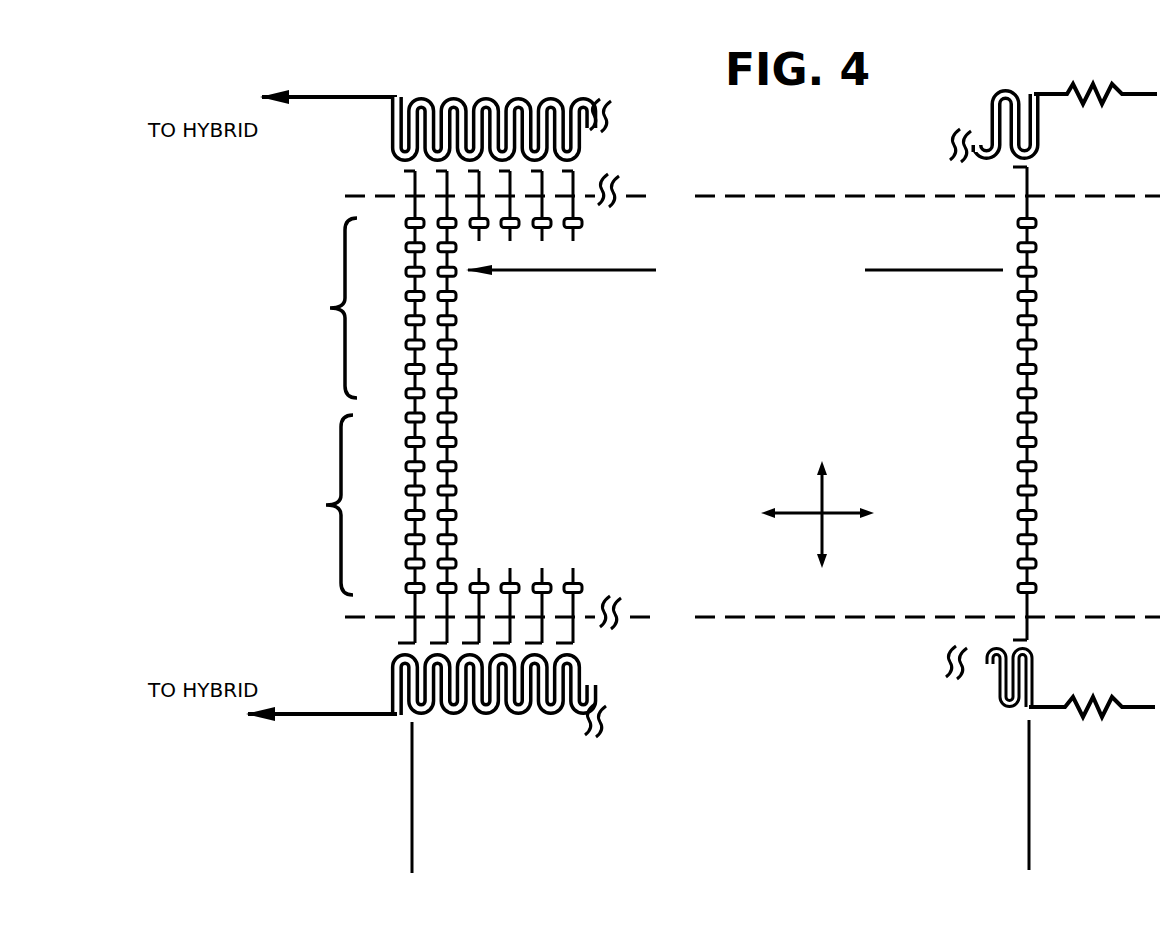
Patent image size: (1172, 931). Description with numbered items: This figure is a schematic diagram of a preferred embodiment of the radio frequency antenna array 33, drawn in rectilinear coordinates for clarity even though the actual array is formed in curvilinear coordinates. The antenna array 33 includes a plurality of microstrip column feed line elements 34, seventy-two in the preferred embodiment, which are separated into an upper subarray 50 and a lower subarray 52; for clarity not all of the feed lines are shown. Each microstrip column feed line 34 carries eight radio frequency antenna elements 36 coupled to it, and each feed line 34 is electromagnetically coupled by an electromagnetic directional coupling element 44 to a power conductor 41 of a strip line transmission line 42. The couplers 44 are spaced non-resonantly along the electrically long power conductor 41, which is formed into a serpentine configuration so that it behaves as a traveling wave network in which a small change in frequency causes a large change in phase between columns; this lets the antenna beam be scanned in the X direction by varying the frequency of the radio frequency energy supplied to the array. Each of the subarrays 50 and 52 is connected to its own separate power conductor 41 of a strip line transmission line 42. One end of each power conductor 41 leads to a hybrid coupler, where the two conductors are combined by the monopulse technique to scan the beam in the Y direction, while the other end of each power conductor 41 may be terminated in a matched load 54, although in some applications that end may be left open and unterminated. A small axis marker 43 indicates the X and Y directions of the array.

The radio frequency antenna array 33 is at (792, 754).
The microstrip column feed line element 34 is at (575, 240).
The radio frequency antenna element 36 is at (411, 345).
The power conductor 41 is at (522, 96).
The strip line transmission line 42 is at (486, 90).
The coordinate axes 43 is at (825, 520).
The electromagnetic directional coupling element 44 is at (409, 171).
The upper subarray 50 is at (321, 308).
The lower subarray 52 is at (328, 505).
The matched load 54 is at (1117, 98).